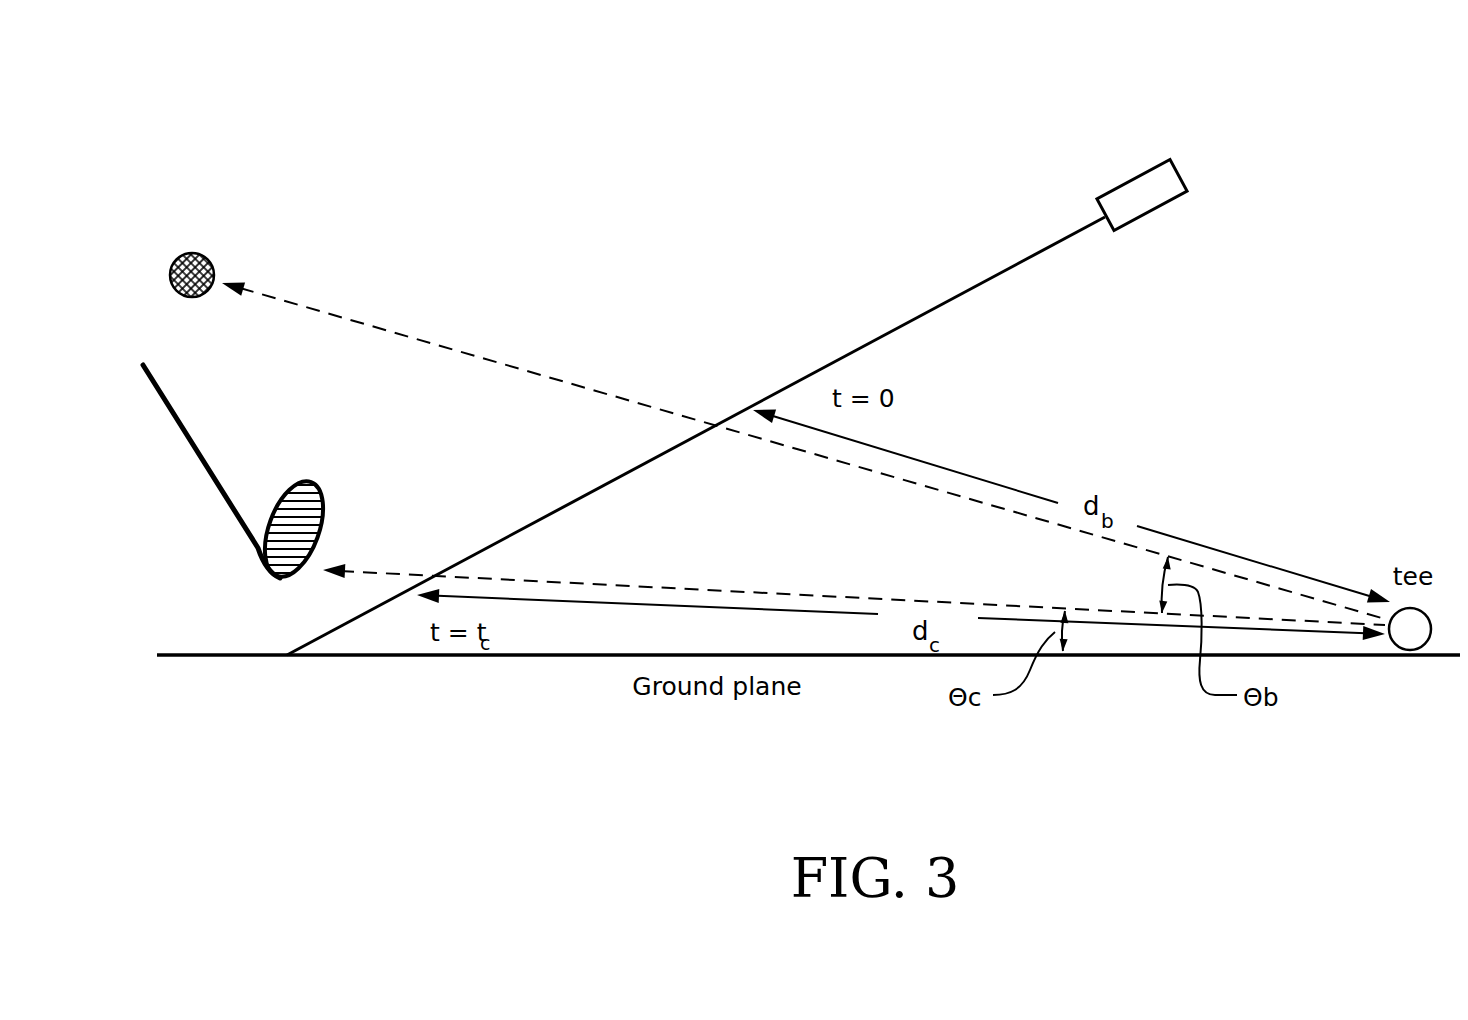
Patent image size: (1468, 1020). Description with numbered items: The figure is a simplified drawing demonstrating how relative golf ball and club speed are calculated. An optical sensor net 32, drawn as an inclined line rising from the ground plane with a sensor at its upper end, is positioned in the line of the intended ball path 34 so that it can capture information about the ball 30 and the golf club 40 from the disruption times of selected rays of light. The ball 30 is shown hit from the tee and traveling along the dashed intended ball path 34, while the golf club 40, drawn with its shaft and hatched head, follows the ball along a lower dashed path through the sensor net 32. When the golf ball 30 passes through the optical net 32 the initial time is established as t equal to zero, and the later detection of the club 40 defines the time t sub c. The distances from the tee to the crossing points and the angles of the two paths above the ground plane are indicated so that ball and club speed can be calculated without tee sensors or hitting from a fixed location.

The ball 30 is at (199, 241).
The optical sensor net 32 is at (737, 407).
The intended ball path 34 is at (410, 336).
The golf club 40 is at (241, 504).